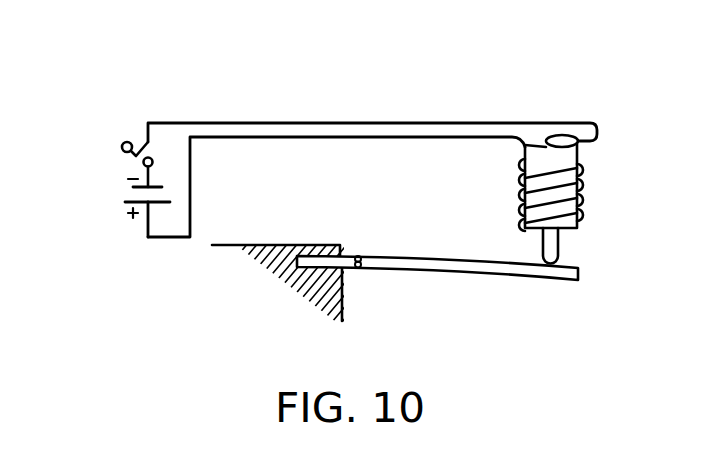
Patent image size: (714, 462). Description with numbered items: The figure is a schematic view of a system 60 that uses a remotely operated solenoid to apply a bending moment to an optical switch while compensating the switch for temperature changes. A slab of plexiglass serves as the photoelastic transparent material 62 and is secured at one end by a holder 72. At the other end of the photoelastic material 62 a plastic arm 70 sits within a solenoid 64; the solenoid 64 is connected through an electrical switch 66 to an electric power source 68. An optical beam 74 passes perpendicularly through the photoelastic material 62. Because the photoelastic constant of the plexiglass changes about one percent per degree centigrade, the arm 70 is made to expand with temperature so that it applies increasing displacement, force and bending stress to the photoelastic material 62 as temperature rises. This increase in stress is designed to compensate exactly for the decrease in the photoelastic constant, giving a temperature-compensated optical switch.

The system 60 is at (197, 86).
The photoelastic transparent material 62 is at (500, 267).
The solenoid 64 is at (583, 188).
The electrical switch 66 is at (106, 142).
The electric power source 68 is at (127, 217).
The plastic arm 70 is at (554, 250).
The holder 72 is at (285, 279).
The optical beam 74 is at (358, 243).